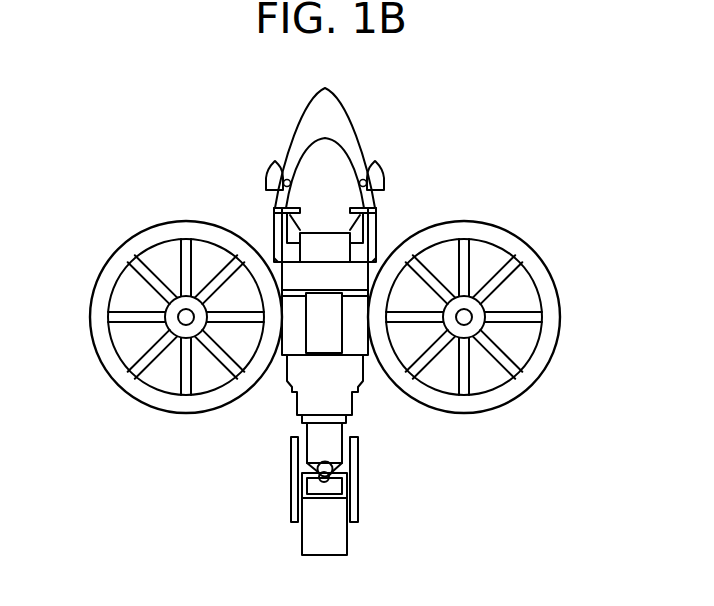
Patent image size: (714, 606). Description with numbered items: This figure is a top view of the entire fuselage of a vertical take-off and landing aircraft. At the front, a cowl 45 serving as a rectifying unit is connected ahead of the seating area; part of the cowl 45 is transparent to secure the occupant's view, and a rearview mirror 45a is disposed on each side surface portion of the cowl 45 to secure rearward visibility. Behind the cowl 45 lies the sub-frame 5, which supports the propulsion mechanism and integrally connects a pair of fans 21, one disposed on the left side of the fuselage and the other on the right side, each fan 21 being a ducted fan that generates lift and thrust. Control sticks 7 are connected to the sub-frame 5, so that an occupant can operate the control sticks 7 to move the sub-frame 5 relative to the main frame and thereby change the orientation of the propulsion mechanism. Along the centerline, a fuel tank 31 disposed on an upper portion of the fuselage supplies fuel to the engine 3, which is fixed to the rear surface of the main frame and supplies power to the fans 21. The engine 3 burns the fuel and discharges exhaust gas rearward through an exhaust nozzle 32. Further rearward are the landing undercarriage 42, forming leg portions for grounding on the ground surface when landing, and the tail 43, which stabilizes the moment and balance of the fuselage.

The engine 3 is at (293, 401).
The sub-frame 5 is at (332, 283).
The control sticks 7 is at (272, 213).
The fans 21 is at (182, 220).
The fuel tank 31 is at (336, 335).
The exhaust nozzle 32 is at (343, 447).
The landing undercarriage 42 is at (291, 468).
The tail 43 is at (349, 535).
The cowl 45 is at (347, 112).
The rearview mirror 45a is at (385, 171).